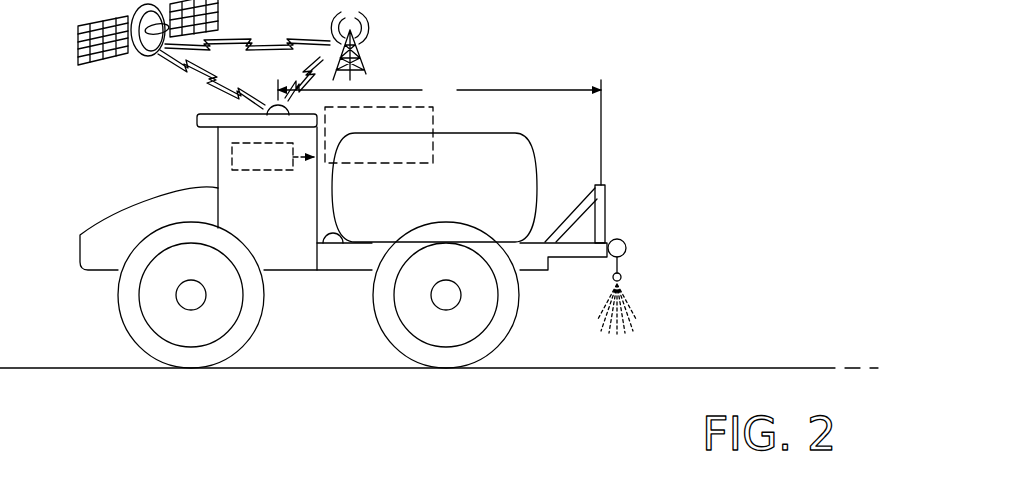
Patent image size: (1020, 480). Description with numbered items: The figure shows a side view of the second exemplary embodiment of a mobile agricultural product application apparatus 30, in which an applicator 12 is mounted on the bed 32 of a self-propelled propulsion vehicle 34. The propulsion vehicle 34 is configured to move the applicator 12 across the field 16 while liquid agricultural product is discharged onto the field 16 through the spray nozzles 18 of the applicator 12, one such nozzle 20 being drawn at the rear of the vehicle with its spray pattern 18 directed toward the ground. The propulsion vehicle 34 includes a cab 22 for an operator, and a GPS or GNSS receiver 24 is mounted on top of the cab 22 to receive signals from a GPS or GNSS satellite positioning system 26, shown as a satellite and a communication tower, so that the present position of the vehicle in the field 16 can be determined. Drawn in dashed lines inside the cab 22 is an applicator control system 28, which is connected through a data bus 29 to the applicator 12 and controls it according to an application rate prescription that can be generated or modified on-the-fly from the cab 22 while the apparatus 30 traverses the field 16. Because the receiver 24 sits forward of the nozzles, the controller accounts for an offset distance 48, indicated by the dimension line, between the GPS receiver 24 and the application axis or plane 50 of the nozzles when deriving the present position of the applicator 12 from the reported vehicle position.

The applicator 12 is at (482, 132).
The field 16 is at (648, 368).
The spray nozzles 18 is at (638, 298).
The spray nozzle 20 is at (630, 267).
The cab 22 is at (220, 170).
The GPS or GNSS receiver 24 is at (265, 108).
The GPS or GNSS satellite positioning system 26 is at (377, 43).
The applicator control system 28 is at (265, 172).
The data bus 29 is at (380, 107).
The mobile agricultural product application apparatus 30 is at (670, 42).
The bed 32 is at (335, 245).
The propulsion vehicle 34 is at (157, 198).
The offset distance 48 is at (439, 91).
The application axis or plane 50 is at (602, 118).